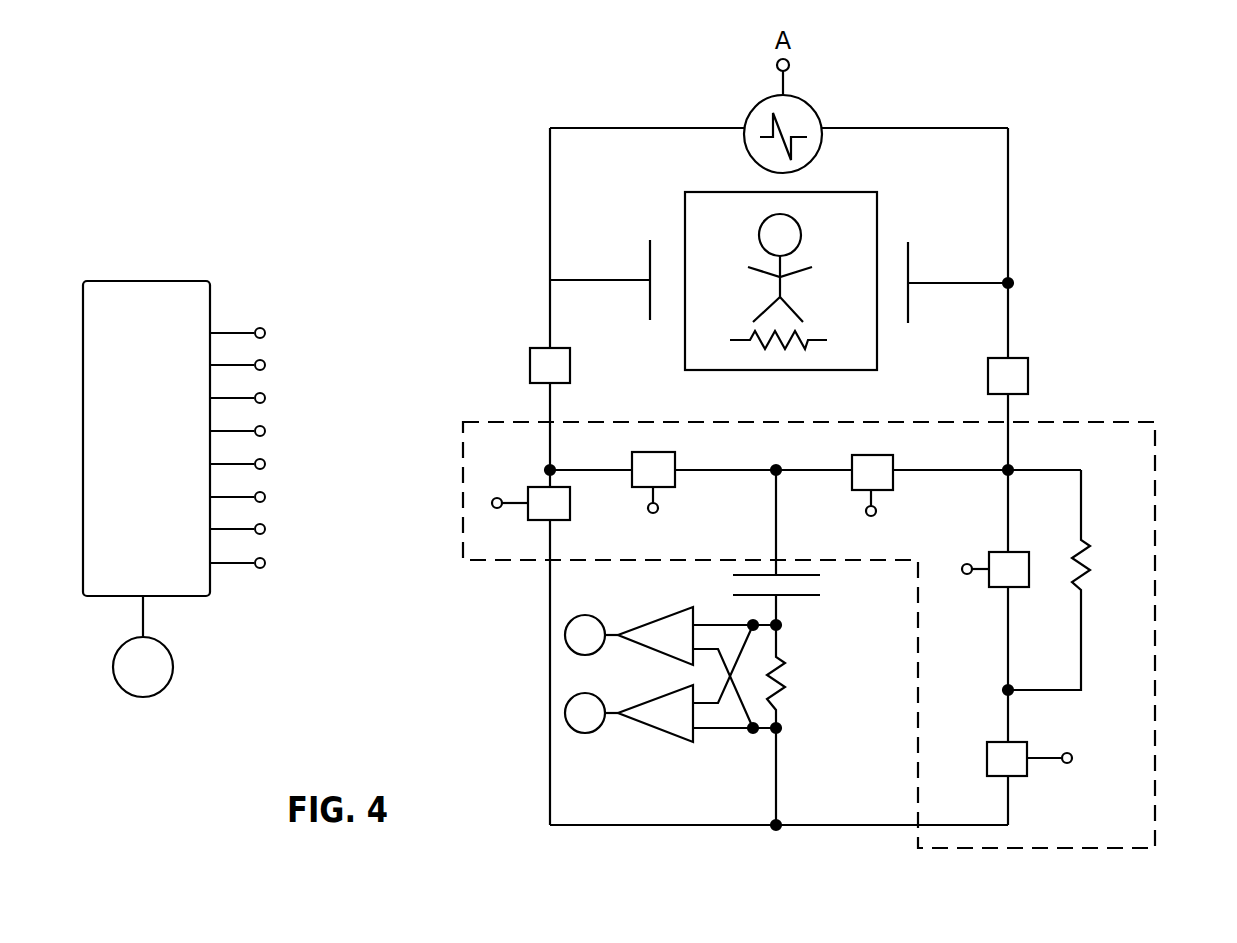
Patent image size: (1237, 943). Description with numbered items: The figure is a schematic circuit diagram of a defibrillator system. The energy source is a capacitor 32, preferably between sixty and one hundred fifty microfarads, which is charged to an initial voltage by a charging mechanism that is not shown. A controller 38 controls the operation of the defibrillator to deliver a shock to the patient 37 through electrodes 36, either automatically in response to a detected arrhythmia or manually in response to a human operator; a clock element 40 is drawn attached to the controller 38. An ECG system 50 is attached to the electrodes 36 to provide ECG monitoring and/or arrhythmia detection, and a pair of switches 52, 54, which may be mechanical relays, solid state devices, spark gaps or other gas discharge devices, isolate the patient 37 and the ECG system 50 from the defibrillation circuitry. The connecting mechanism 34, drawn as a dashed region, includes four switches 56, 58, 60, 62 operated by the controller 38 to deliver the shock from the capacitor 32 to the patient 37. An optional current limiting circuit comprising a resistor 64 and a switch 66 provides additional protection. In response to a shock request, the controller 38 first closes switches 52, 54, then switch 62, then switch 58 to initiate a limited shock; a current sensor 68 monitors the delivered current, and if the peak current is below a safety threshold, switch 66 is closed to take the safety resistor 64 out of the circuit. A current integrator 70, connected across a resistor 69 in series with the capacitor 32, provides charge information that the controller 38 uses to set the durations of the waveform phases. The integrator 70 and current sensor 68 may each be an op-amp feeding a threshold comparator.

The capacitor 32 is at (793, 597).
The connecting mechanism 34 is at (1152, 778).
The electrodes 36 is at (650, 298).
The patient 37 is at (685, 205).
The controller 38 is at (131, 457).
The clock 40 is at (143, 646).
The ECG system 50 is at (812, 106).
The switch 52 is at (530, 358).
The switch 54 is at (1028, 368).
The switch 56 is at (570, 512).
The switch 58 is at (675, 478).
The switch 60 is at (893, 480).
The switch 62 is at (1027, 745).
The resistor 64 is at (1093, 582).
The switch 66 is at (995, 587).
The current sensor 68 is at (657, 729).
The resistor 69 is at (790, 700).
The current integrator 70 is at (663, 615).